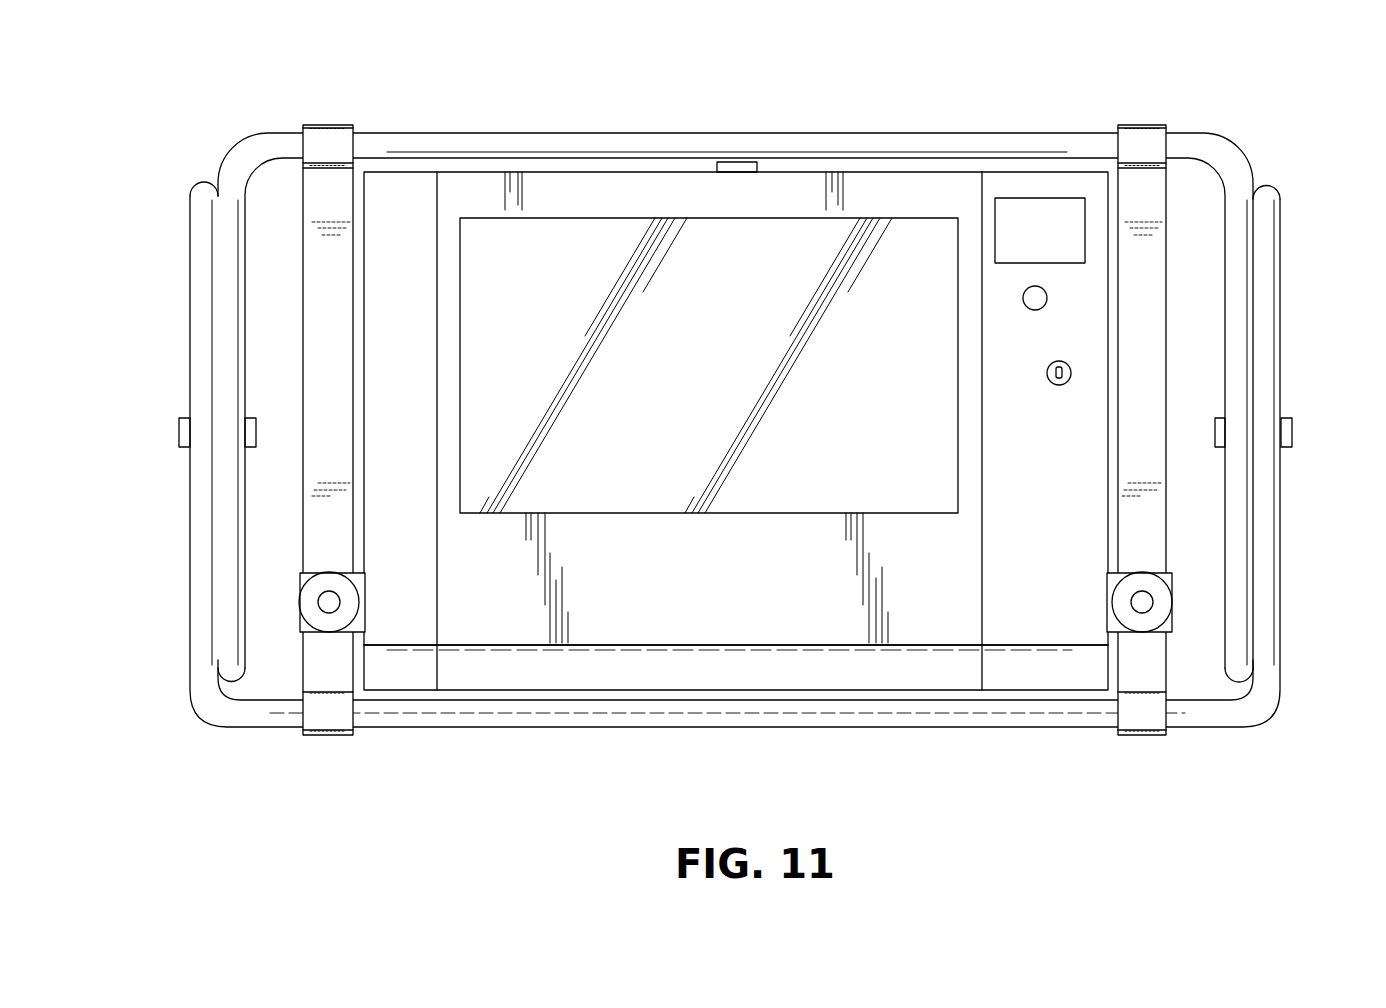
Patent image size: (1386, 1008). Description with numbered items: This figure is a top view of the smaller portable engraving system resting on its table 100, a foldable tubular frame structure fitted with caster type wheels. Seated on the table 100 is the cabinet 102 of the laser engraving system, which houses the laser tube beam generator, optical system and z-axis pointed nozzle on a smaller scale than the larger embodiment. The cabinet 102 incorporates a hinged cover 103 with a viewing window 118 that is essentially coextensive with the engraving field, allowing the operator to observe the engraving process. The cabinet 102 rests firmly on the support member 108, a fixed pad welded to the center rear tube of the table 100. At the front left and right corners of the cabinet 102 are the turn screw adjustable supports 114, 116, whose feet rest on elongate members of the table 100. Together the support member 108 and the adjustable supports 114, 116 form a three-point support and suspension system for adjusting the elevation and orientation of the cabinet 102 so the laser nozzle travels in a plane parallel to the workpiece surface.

The table 100 is at (1012, 133).
The cabinet 102 is at (612, 173).
The hinged cover 103 is at (740, 618).
The support member 108 is at (735, 163).
The turn screw adjustable support 114 is at (300, 602).
The turn screw adjustable support 116 is at (1174, 604).
The viewing window 118 is at (863, 218).